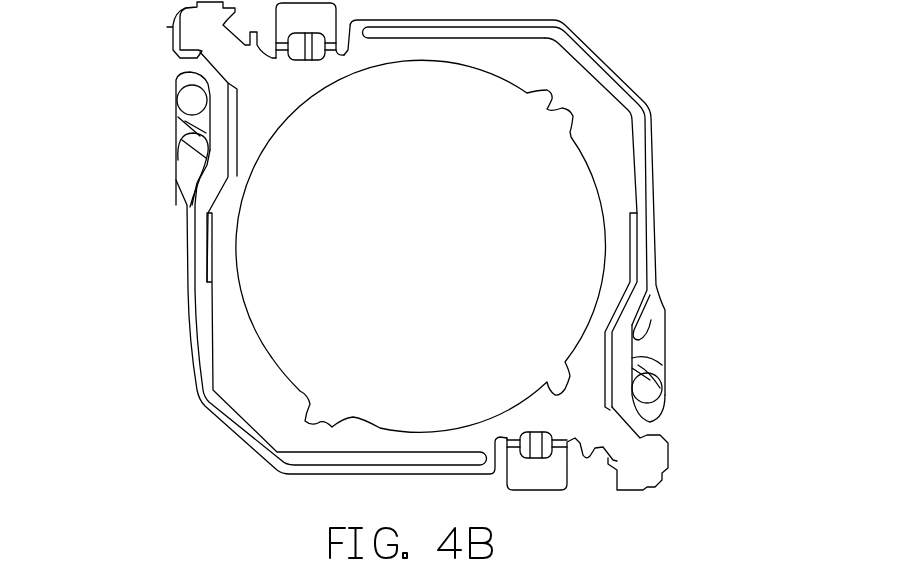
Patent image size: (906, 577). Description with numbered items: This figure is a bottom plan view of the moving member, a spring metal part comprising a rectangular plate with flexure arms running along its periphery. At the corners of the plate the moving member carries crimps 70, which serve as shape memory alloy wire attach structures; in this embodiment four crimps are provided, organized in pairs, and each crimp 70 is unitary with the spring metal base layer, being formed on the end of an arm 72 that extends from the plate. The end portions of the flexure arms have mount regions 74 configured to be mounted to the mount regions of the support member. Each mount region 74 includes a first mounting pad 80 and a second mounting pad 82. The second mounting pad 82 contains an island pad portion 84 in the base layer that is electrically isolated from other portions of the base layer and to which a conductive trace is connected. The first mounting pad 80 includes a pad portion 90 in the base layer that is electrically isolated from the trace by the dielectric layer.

The crimp 70 is at (177, 28).
The arm 72 is at (621, 458).
The mount region 74 is at (178, 127).
The first mounting pad 80 is at (180, 152).
The second mounting pad 82 is at (178, 83).
The island pad portion 84 is at (645, 394).
The pad portion 90 is at (650, 338).